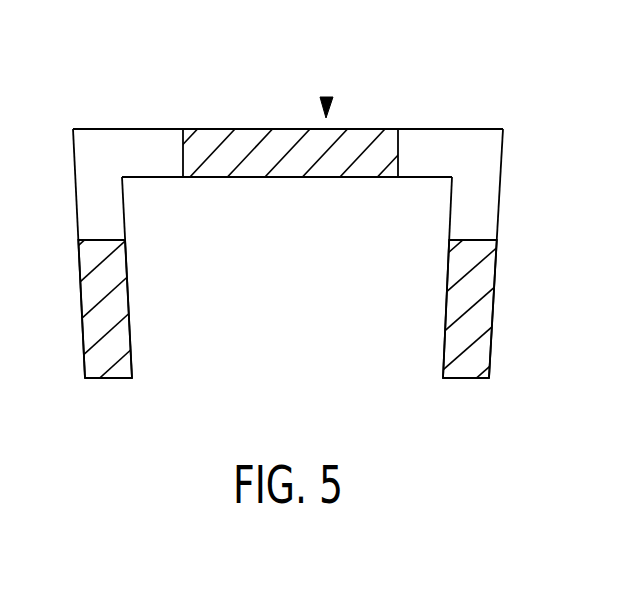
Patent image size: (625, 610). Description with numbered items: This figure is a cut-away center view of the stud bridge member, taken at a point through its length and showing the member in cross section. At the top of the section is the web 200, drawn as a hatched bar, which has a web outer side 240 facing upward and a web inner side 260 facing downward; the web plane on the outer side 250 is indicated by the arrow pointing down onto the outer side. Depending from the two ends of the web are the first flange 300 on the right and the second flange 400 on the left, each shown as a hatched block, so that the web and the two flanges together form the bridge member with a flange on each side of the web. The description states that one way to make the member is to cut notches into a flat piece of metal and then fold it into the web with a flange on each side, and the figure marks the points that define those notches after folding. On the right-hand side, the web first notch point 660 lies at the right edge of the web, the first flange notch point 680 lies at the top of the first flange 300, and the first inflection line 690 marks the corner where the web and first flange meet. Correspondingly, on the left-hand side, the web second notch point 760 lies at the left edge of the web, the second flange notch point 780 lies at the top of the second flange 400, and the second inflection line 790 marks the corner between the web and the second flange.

The web 200 is at (313, 155).
The web outer side 240 is at (361, 128).
The web plane on the outer side 250 is at (327, 98).
The web inner side 260 is at (318, 178).
The first flange 300 is at (462, 272).
The second flange 400 is at (128, 271).
The web first notch point 660 is at (400, 145).
The first flange notch point 680 is at (480, 237).
The first inflection line 690 is at (503, 128).
The web second notch point 760 is at (182, 128).
The second flange notch point 780 is at (92, 237).
The second inflection line 790 is at (73, 128).